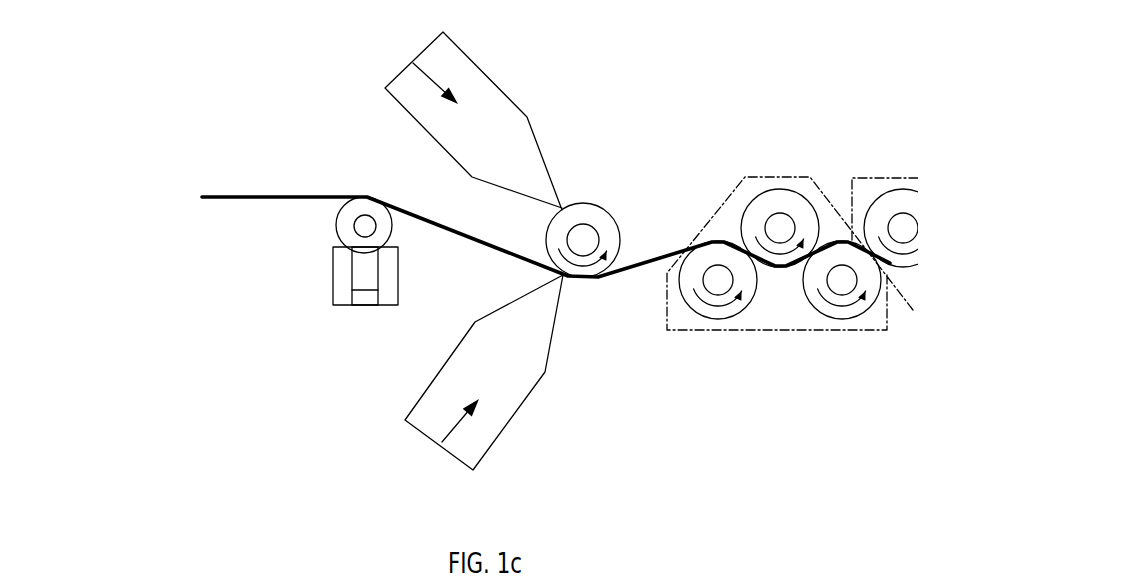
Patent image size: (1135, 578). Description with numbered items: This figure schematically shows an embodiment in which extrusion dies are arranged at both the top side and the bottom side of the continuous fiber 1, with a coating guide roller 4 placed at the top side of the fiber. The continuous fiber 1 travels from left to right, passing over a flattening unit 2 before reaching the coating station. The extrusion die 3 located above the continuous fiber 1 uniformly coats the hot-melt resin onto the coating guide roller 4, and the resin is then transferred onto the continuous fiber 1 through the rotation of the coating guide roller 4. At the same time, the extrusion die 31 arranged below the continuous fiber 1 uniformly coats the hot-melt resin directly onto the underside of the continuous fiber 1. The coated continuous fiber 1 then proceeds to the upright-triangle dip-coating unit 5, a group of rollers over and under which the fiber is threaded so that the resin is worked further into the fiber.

The continuous fiber 1 is at (481, 139).
The flattening unit 2 is at (283, 271).
The extrusion die 3 is at (502, 105).
The extrusion die 31 is at (515, 395).
The coating guide roller 4 is at (645, 164).
The upright-triangle dip-coating unit 5 is at (804, 182).